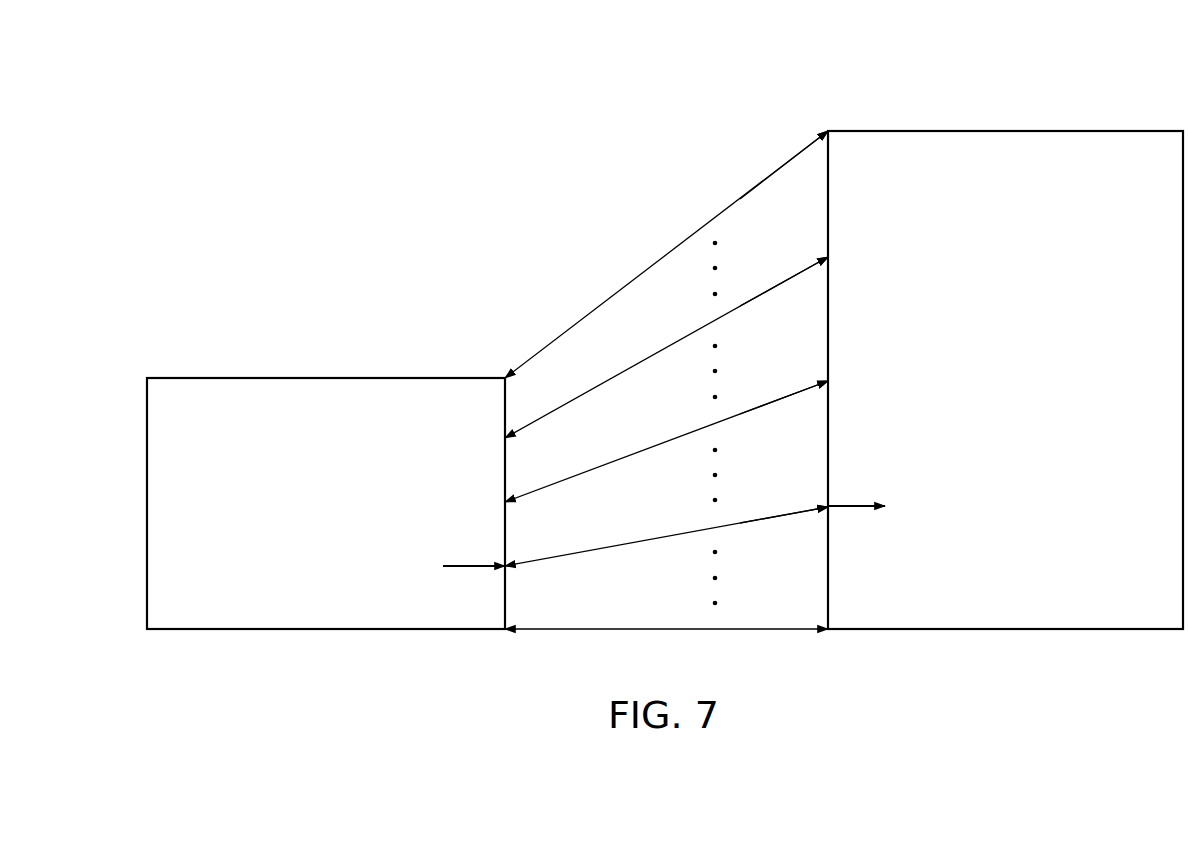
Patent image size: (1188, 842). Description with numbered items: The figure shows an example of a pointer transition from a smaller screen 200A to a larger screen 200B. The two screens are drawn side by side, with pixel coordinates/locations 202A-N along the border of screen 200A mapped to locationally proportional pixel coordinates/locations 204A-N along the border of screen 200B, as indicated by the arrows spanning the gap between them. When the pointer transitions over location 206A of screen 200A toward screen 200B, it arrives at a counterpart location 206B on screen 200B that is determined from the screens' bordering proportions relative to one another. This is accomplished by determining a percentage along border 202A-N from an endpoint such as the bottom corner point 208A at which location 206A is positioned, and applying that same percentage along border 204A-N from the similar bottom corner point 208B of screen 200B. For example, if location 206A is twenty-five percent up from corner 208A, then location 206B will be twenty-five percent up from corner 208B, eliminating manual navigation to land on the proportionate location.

The screen 200A is at (410, 378).
The screen 200B is at (1130, 131).
The pixel coordinates/locations on border of screen 200A 202A-N is at (499, 356).
The pixel coordinates/locations on border of screen 200B 204A-N is at (821, 116).
The location 206A is at (505, 566).
The counterpart location 206B is at (870, 478).
The bottom corner point 208A is at (510, 642).
The bottom corner point 208B is at (821, 642).